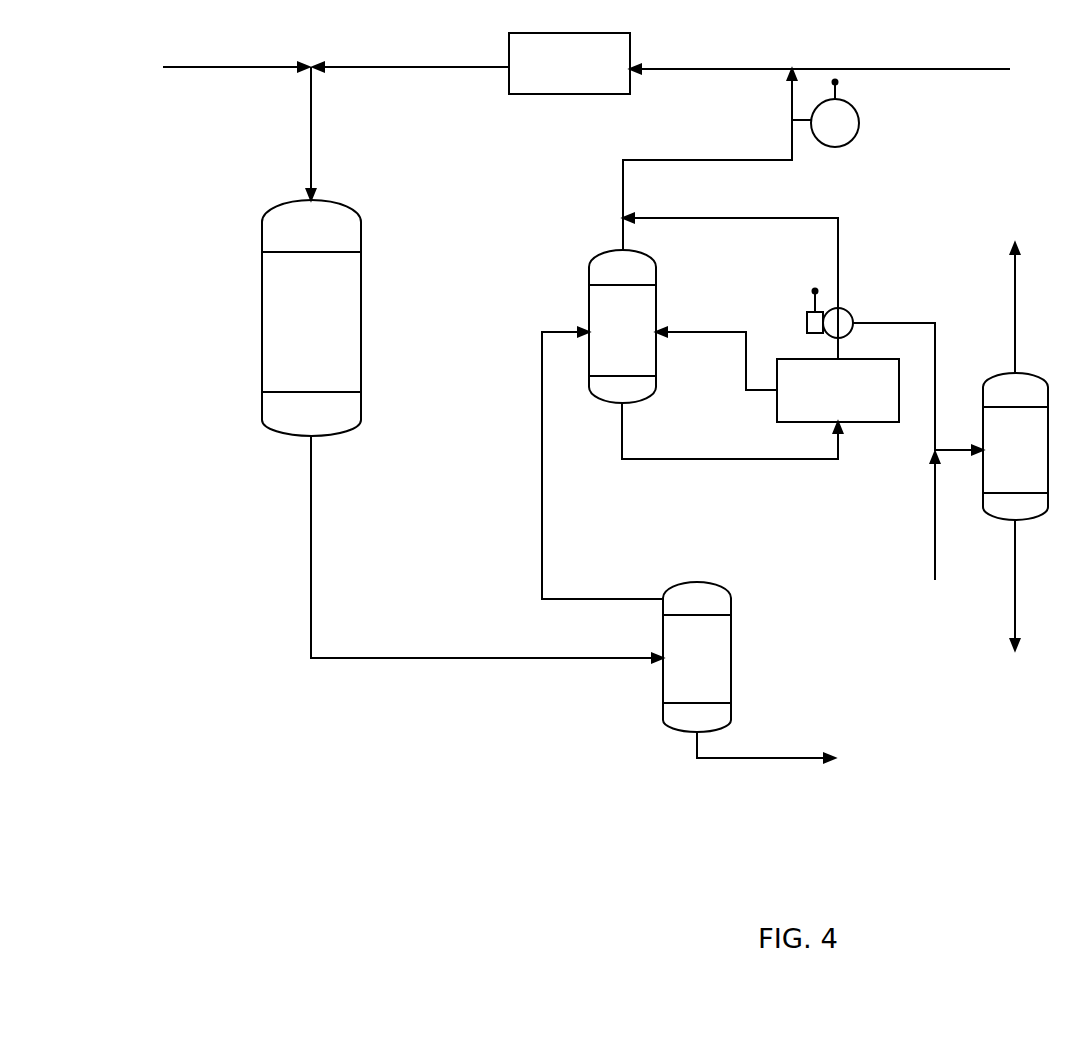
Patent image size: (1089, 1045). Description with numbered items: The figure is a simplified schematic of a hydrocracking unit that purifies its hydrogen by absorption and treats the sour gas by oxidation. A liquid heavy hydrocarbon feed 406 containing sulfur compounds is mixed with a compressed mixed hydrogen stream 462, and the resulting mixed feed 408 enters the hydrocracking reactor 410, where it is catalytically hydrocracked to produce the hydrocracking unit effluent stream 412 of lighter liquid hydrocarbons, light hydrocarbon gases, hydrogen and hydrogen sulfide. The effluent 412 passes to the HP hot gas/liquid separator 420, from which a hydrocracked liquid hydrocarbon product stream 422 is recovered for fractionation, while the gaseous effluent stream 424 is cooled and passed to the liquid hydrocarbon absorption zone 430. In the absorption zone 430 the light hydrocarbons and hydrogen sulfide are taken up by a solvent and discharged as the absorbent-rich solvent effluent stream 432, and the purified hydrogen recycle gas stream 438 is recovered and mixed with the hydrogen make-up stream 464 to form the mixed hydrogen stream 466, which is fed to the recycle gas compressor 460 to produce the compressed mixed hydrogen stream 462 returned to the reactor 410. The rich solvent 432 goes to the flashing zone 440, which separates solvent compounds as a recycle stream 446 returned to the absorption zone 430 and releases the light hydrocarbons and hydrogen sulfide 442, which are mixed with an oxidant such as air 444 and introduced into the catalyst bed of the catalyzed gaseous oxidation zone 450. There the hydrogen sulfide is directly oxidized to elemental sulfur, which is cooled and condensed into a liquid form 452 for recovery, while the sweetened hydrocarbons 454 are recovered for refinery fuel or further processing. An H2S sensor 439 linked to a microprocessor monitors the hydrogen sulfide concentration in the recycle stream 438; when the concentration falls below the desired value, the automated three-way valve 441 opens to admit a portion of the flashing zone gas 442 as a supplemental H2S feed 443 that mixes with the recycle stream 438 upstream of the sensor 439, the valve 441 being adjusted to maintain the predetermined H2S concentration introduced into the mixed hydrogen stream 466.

The liquid heavy hydrocarbon feed 406 is at (236, 53).
The mixed feed 408 is at (339, 133).
The hydrocracking reactor 410 is at (286, 331).
The hydrocracking unit effluent stream 412 is at (487, 549).
The HP hot gas/liquid separator 420 is at (672, 669).
The hydrocracked liquid hydrocarbon product stream 422 is at (766, 768).
The gaseous effluent stream 424 is at (570, 464).
The liquid hydrocarbon absorption zone 430 is at (598, 348).
The absorbent-rich solvent effluent stream 432 is at (732, 431).
The purified hydrogen recycle gas stream 438 is at (710, 159).
The H2S sensor 439 is at (828, 128).
The flashing zone 440 is at (813, 406).
The automated three-way valve 441 is at (850, 320).
The C1 to C4 compounds and hydrogen sulfide 442 is at (922, 386).
The supplemental H2S feed 443 is at (730, 261).
The oxidant 444 is at (914, 516).
The recycle stream 446 is at (716, 346).
The catalyzed gaseous oxidation zone 450 is at (990, 464).
The liquid elemental sulfur 452 is at (1045, 585).
The sweetened hydrocarbons 454 is at (1043, 308).
The recycle gas compressor 460 is at (545, 76).
The compressed mixed hydrogen stream 462 is at (411, 53).
The hydrogen make-up stream 464 is at (901, 51).
The mixed hydrogen stream 466 is at (711, 54).